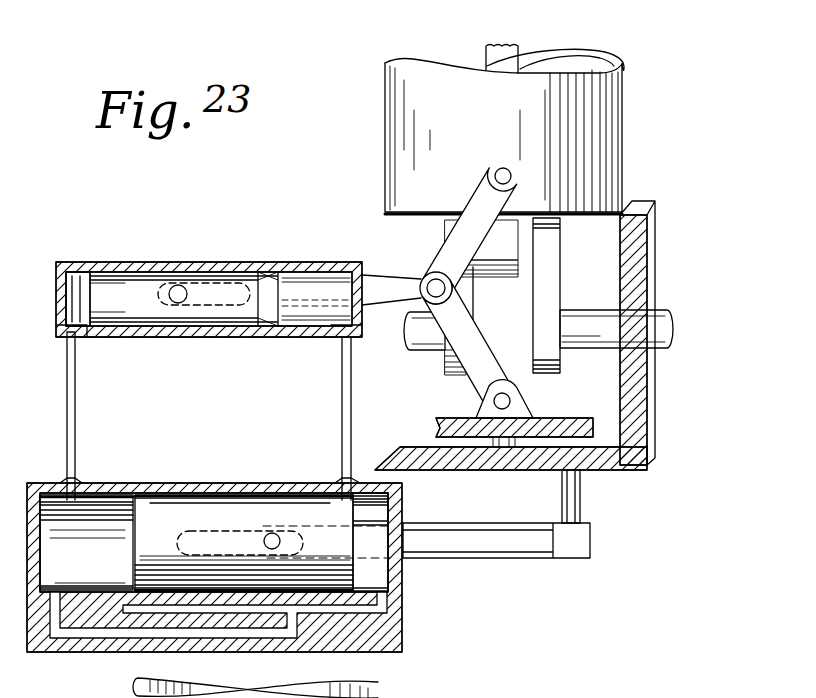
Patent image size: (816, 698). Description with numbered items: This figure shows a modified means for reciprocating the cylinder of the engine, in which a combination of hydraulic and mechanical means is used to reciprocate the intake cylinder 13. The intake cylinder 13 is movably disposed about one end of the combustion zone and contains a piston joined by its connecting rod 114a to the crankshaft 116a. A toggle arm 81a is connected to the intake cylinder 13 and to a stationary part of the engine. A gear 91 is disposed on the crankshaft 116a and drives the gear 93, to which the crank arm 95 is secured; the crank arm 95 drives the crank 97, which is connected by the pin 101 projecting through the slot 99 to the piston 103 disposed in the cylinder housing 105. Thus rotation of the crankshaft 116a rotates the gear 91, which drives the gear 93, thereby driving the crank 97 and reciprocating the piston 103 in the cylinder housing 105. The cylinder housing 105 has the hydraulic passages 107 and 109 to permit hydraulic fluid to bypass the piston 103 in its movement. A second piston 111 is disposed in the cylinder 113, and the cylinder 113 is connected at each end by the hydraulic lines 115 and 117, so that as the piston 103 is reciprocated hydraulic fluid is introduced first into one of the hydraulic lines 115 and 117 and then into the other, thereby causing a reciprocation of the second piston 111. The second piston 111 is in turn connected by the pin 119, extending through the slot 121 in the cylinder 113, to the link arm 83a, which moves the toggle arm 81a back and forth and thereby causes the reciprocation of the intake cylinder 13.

The intake cylinder 13 is at (623, 118).
The connecting rod 114a is at (484, 54).
The cylinder 113 is at (124, 262).
The second piston 111 is at (133, 300).
The pin 119 is at (176, 286).
The slot 121 is at (220, 283).
The hydraulic line 115 is at (76, 410).
The hydraulic line 117 is at (342, 388).
The link arm 83a is at (402, 270).
The toggle arm 81a is at (453, 278).
The crankshaft 116a is at (583, 320).
The gear 91 is at (655, 392).
The gear 93 is at (437, 470).
The crank arm 95 is at (580, 497).
The crank 97 is at (520, 552).
The hydraulic passage 109 is at (83, 636).
The hydraulic passage 107 is at (388, 604).
The piston 103 is at (145, 543).
The cylinder housing 105 is at (202, 483).
The slot 99 is at (217, 536).
The pin 101 is at (273, 533).